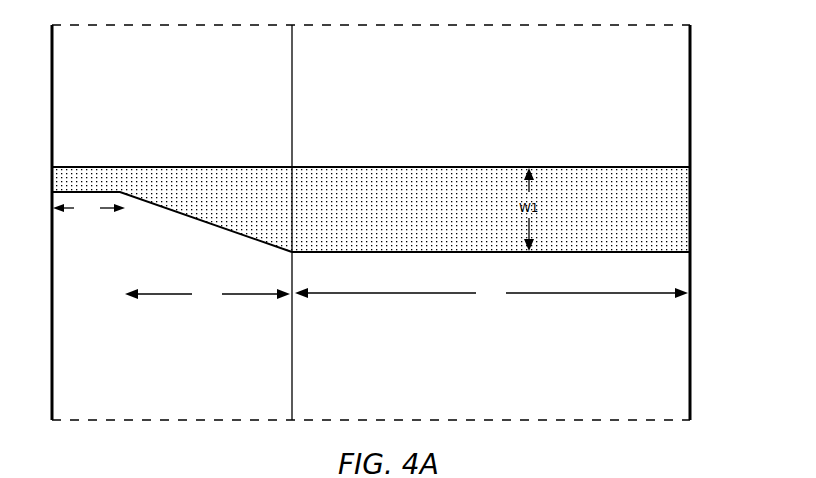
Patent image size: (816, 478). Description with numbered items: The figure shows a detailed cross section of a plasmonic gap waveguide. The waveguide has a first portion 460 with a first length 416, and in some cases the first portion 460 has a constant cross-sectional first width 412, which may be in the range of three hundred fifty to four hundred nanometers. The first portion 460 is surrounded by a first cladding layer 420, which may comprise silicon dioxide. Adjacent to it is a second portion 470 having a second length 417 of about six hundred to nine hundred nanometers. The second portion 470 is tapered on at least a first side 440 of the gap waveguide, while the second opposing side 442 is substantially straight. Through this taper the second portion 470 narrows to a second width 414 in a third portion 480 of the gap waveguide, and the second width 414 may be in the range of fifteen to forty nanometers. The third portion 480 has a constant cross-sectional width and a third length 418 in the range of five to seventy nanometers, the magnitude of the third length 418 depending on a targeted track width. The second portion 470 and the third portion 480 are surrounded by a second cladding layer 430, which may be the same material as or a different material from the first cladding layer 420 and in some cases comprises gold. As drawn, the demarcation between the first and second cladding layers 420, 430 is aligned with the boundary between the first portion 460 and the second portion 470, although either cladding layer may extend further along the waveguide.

The cross-sectional width W1 412 is at (551, 208).
The second width W2 414 is at (23, 165).
The length L1 416 is at (493, 313).
The length L2 417 is at (203, 312).
The length L3 418 is at (82, 228).
The first cladding layer 420 is at (680, 75).
The second cladding layer 430 is at (148, 30).
The first side 440 is at (185, 216).
The second opposing side 442 is at (189, 164).
The first portion 460 is at (497, 128).
The second portion 470 is at (213, 110).
The third portion 480 is at (82, 128).